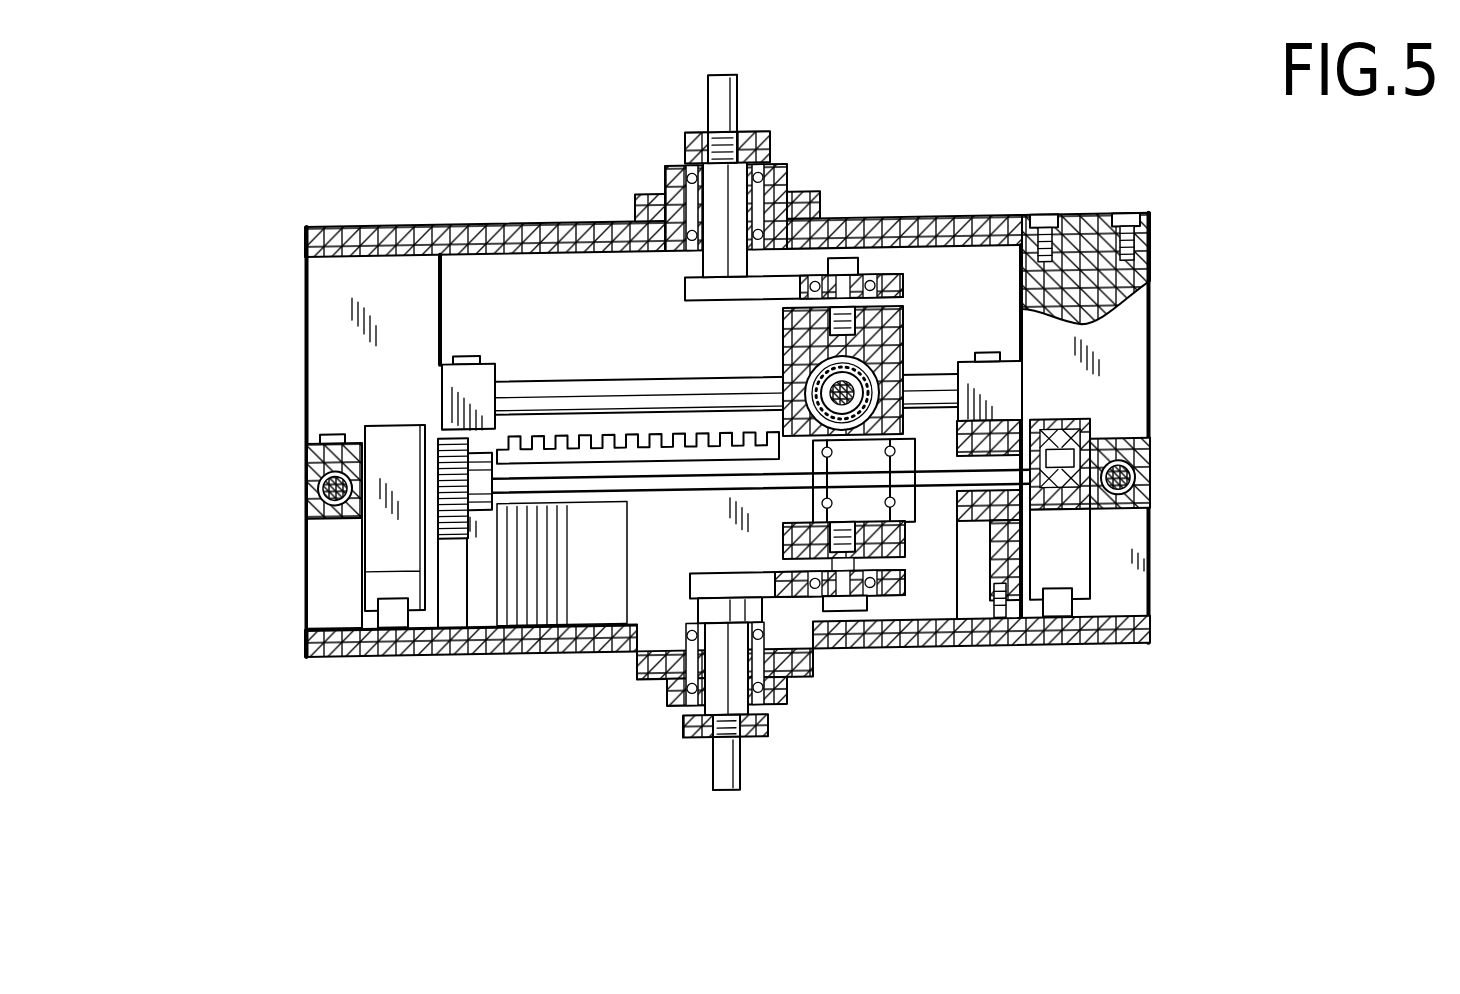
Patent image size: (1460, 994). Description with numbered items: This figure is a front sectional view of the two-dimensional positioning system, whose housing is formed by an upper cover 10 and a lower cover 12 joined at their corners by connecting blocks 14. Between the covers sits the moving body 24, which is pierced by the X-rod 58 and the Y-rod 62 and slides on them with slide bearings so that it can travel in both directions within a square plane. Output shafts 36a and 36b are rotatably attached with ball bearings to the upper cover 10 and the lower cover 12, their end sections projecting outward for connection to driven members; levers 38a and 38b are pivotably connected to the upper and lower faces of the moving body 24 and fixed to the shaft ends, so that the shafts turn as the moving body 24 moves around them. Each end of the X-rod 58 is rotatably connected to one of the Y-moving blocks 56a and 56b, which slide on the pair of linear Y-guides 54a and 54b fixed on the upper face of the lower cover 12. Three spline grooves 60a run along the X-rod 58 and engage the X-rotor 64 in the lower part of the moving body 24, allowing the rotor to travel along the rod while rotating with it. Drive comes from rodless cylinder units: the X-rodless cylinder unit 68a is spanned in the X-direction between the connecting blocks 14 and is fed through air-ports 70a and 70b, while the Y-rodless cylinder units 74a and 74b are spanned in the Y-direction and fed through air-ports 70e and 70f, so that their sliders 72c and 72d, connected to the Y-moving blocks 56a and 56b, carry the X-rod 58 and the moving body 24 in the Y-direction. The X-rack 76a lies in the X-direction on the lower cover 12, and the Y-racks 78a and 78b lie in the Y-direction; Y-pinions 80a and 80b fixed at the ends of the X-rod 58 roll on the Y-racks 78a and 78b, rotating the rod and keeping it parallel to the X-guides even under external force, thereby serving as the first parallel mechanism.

The upper cover 10 is at (328, 232).
The lower cover 12 is at (1128, 670).
The connecting blocks 14 is at (325, 335).
The moving body 24 is at (783, 373).
The output shaft 36a is at (737, 116).
The output shaft 36b is at (740, 782).
The lever 38a is at (905, 300).
The lever 38b is at (690, 592).
The Y-guide 54a is at (1060, 618).
The Y-guide 54b is at (310, 655).
The Y-moving block 56a is at (1060, 423).
The Y-moving block 56b is at (383, 543).
The X-rod 58 is at (453, 621).
The spline grooves 60a is at (568, 506).
The Y-rod 62 is at (908, 370).
The X-rotor 64 is at (866, 540).
The X-rodless cylinder unit 68a is at (523, 392).
The air-port 70a is at (990, 370).
The air-port 70b is at (460, 364).
The air-port 70e is at (1035, 462).
The air-port 70f is at (335, 446).
The slider 72c is at (1140, 519).
The slider 72d is at (327, 462).
The Y-rodless cylinder unit 74a is at (1135, 497).
The Y-rodless cylinder unit 74b is at (320, 495).
The X-rack 76a is at (633, 445).
The Y-rack 78a is at (990, 587).
The Y-rack 78b is at (397, 622).
The Y-pinion 80a is at (1100, 363).
The Y-pinion 80b is at (440, 437).